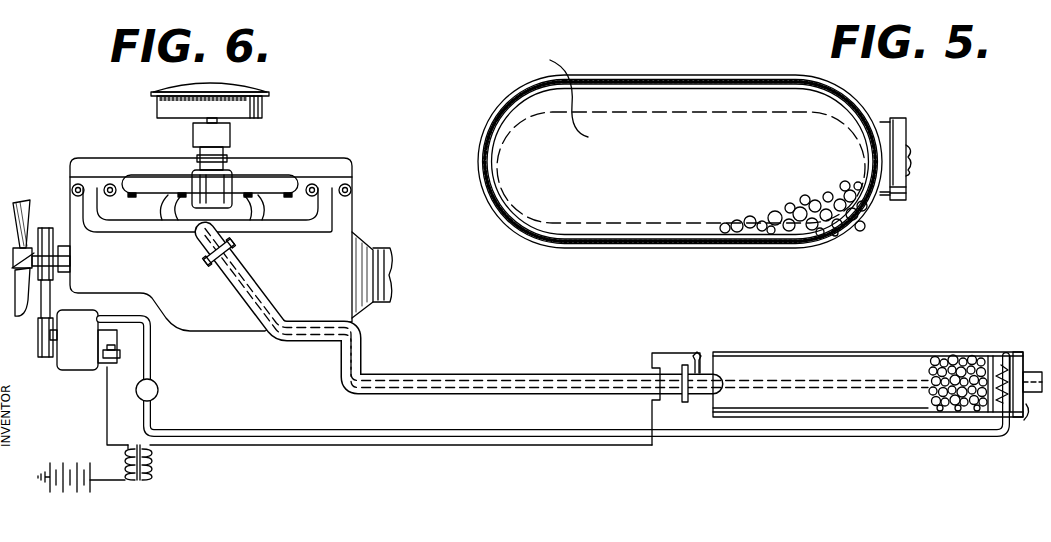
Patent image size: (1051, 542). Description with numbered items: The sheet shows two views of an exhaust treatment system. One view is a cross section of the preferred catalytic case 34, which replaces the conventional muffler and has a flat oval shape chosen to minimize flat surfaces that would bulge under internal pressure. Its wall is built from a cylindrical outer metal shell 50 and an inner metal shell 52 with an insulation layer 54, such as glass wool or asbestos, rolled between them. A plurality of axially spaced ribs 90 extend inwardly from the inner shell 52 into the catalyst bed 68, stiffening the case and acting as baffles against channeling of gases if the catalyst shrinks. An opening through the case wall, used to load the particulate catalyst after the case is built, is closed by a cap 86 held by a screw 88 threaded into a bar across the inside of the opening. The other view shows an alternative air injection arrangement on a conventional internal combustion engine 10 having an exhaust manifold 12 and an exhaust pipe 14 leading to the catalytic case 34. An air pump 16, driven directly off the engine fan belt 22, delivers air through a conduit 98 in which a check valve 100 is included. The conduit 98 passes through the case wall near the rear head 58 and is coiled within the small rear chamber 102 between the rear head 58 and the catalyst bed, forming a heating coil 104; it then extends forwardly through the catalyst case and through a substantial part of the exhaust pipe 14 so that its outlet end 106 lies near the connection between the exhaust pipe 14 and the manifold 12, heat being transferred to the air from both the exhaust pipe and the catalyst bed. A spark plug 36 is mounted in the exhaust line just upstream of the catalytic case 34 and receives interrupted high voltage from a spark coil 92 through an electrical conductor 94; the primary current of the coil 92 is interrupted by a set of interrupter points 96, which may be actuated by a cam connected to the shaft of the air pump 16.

In FIG. 6, the internal combustion engine 10 is at (343, 219).
In FIG. 6, the exhaust manifold 12 is at (203, 243).
In FIG. 6, the exhaust pipe 14 is at (263, 298).
In FIG. 6, the air pump 16 is at (70, 368).
In FIG. 6, the fan belt 22 is at (53, 305).
In FIG. 6, the catalytic case 34 is at (876, 348).
In FIG. 5, the catalytic case 34 is at (680, 140).
In FIG. 6, the spark plug 36 is at (700, 354).
In FIG. 5, the outer metal shell 50 is at (772, 78).
In FIG. 5, the inner metal shell 52 is at (758, 82).
In FIG. 5, the insulation layer 54 is at (710, 83).
In FIG. 6, the rear head 58 is at (1024, 420).
In FIG. 5, the catalyst bed 68 is at (557, 93).
In FIG. 5, the cap 86 is at (900, 137).
In FIG. 5, the screw 88 is at (910, 160).
In FIG. 5, the ribs 90 is at (655, 111).
In FIG. 6, the spark coil 92 is at (156, 478).
In FIG. 6, the electrical conductor 94 is at (324, 444).
In FIG. 6, the interrupter points 96 is at (128, 355).
In FIG. 6, the conduit 98 is at (243, 437).
In FIG. 6, the check valve 100 is at (158, 390).
In FIG. 6, the rear chamber 102 is at (1005, 358).
In FIG. 6, the heating coil 104 is at (988, 365).
In FIG. 6, the outlet end 106 is at (228, 265).